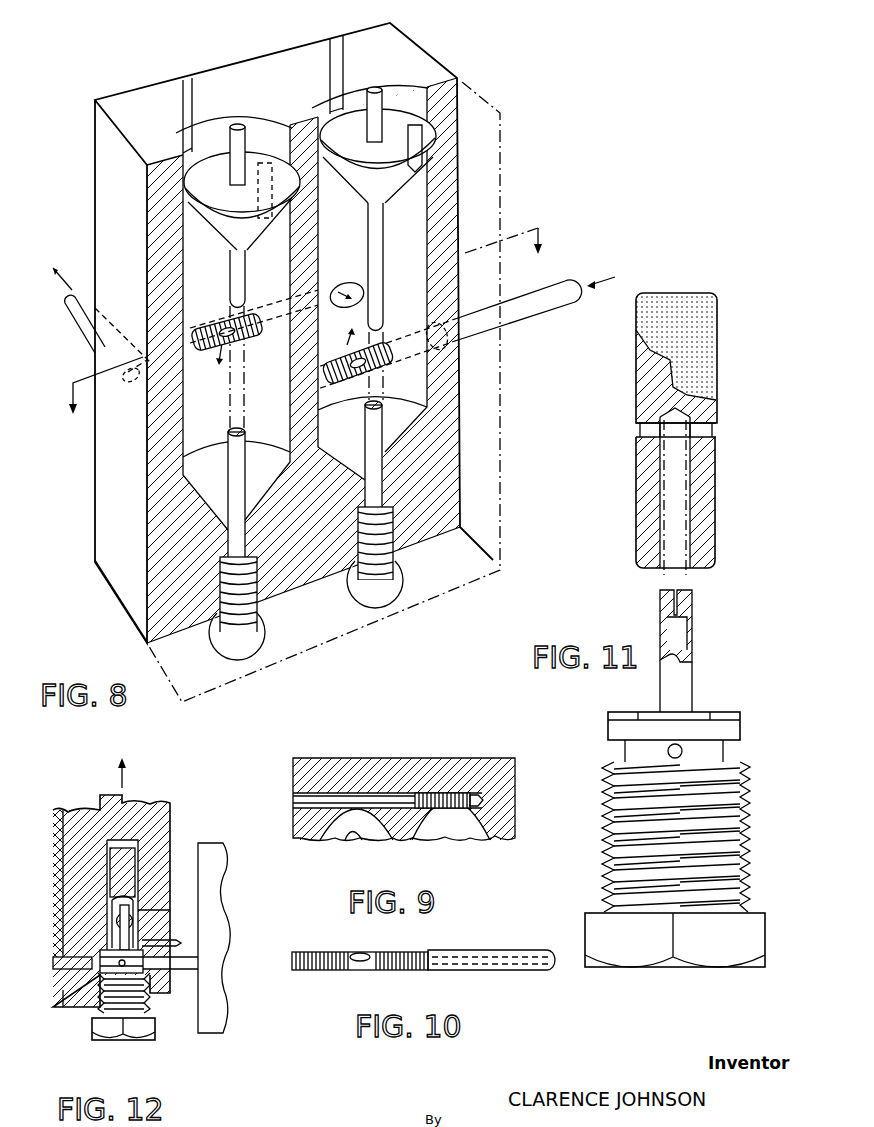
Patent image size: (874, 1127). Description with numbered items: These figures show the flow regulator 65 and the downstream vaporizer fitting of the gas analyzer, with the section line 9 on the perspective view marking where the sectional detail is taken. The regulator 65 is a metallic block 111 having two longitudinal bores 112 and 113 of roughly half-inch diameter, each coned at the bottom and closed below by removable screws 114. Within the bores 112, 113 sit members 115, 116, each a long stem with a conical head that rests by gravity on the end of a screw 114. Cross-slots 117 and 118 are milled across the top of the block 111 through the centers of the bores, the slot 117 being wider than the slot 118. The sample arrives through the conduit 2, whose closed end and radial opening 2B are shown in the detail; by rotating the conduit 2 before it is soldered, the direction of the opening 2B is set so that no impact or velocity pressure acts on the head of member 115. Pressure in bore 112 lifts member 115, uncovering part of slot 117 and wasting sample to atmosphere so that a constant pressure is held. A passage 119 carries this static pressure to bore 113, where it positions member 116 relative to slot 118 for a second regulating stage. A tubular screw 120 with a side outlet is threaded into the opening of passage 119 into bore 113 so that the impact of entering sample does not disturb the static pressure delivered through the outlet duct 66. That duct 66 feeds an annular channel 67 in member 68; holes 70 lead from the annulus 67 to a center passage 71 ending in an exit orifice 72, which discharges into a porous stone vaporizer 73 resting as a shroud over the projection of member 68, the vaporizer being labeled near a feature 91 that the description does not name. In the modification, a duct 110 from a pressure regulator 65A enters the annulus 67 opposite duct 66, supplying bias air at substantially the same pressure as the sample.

In FIG. 8, the conduit 2 is at (543, 313).
In FIG. 10, the conduit 2 is at (517, 970).
In FIG. 10, the radial opening 2B is at (364, 961).
In FIG. 8, the section line 9- 9 is at (310, 392).
In FIG. 8, the flow regulator 65 is at (80, 221).
In FIG. 12, the pressure regulator 65A is at (228, 1012).
In FIG. 8, the duct 66 is at (80, 325).
In FIG. 12, the duct 66 is at (53, 961).
In FIG. 11, the annular channel 67 is at (623, 750).
In FIG. 11, the member 68 is at (586, 861).
In FIG. 11, the holes 70 is at (683, 751).
In FIG. 11, the center passage 71 is at (680, 639).
In FIG. 11, the exit orifice 72 is at (677, 592).
In FIG. 11, the porous stone vaporizer 73 is at (717, 352).
In FIG. 12, the porous stone vaporizer 73 is at (111, 899).
In FIG. 11, the groove 91 is at (717, 434).
In FIG. 12, the duct 110 is at (178, 972).
In FIG. 8, the metallic block 111 is at (147, 600).
In FIG. 8, the bore 112 is at (376, 75).
In FIG. 8, the bore 113 is at (238, 110).
In FIG. 8, the removable screws 114 is at (270, 637).
In FIG. 8, the member 115 is at (384, 246).
In FIG. 8, the member 116 is at (246, 281).
In FIG. 8, the cross-slot 117 is at (322, 42).
In FIG. 8, the cross-slot 118 is at (183, 78).
In FIG. 8, the passage 119 is at (348, 282).
In FIG. 9, the passage 119 is at (447, 830).
In FIG. 9, the tubular screw 120 is at (352, 808).